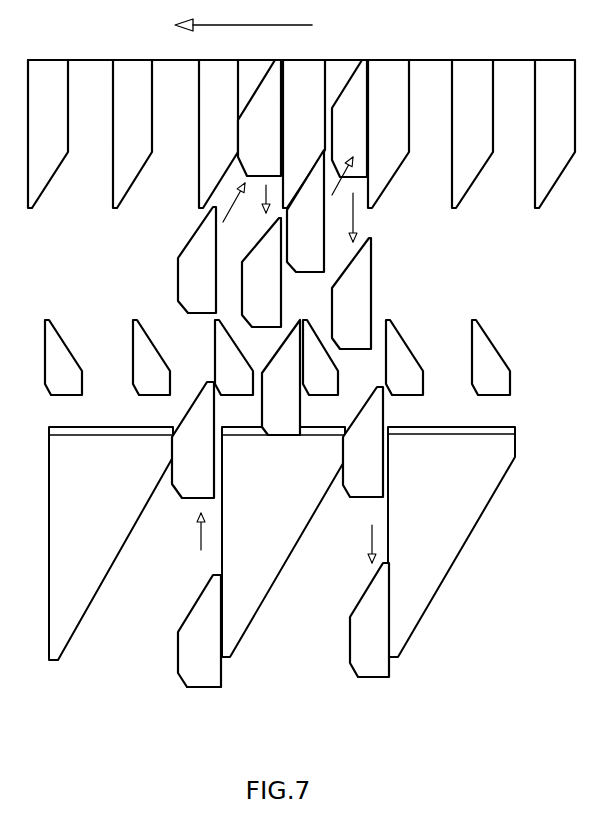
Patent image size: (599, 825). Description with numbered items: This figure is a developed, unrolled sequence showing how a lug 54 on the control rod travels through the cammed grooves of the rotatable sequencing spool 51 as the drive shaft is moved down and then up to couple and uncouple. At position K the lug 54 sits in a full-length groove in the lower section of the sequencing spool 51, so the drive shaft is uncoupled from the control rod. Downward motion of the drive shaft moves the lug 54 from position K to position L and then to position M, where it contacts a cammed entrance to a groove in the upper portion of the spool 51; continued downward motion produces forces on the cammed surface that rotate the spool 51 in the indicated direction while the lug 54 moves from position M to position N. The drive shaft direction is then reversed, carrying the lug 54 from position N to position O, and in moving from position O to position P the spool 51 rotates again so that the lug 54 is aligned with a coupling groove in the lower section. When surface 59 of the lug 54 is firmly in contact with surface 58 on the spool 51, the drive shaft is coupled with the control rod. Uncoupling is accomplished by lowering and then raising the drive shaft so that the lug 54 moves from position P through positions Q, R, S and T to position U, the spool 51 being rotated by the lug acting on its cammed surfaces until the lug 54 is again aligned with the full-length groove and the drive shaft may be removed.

The sequencing spool 51 is at (57, 491).
The lug 54 is at (214, 669).
The surface on sequencing spool 58 is at (116, 433).
The surface of lug 59 is at (283, 434).
The position K is at (199, 631).
The position L is at (193, 440).
The position M is at (197, 260).
The position N is at (259, 118).
The position O is at (261, 272).
The position P is at (281, 377).
The position Q is at (305, 211).
The position R is at (349, 118).
The position S is at (351, 293).
The position T is at (363, 442).
The position U is at (369, 620).